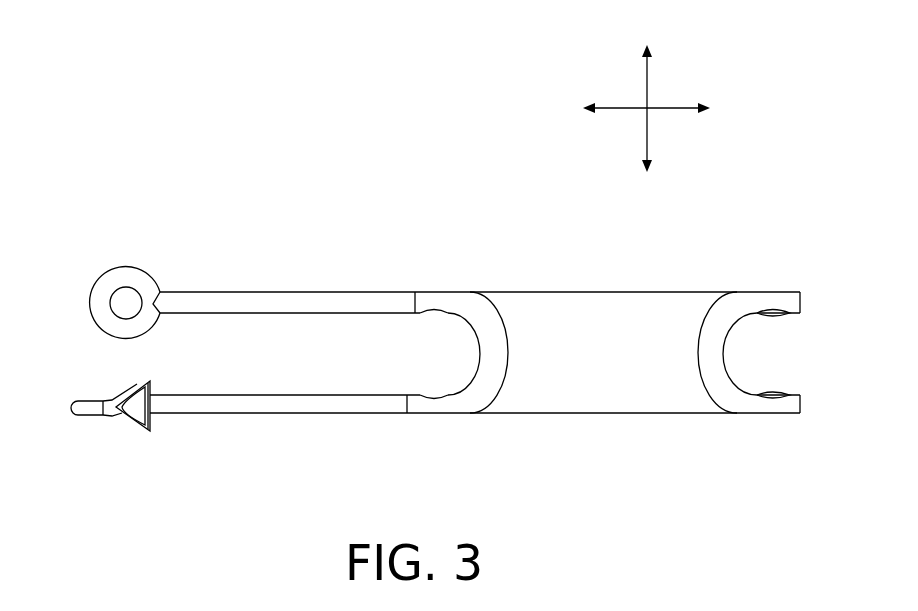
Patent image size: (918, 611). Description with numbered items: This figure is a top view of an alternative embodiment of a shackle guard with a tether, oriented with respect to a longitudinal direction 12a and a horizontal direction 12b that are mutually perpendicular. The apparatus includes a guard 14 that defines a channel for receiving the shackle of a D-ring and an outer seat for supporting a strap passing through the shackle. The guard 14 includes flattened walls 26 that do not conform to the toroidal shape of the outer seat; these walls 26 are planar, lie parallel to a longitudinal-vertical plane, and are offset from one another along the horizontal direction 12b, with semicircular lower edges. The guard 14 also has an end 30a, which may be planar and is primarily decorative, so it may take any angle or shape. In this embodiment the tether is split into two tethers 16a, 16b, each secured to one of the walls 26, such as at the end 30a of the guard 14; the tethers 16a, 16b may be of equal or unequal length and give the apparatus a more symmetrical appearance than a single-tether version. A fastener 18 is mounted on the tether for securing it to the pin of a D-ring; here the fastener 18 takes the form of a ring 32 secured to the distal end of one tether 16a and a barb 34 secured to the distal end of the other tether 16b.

The longitudinal direction 12a is at (687, 110).
The horizontal direction 12b is at (647, 82).
The guard 14 is at (633, 284).
The tether 16a is at (277, 298).
The tether 16b is at (260, 403).
The fastener 18 is at (86, 343).
The flattened walls 26 is at (487, 290).
The end 30a is at (460, 300).
The ring 32 is at (125, 272).
The barb 34 is at (120, 414).